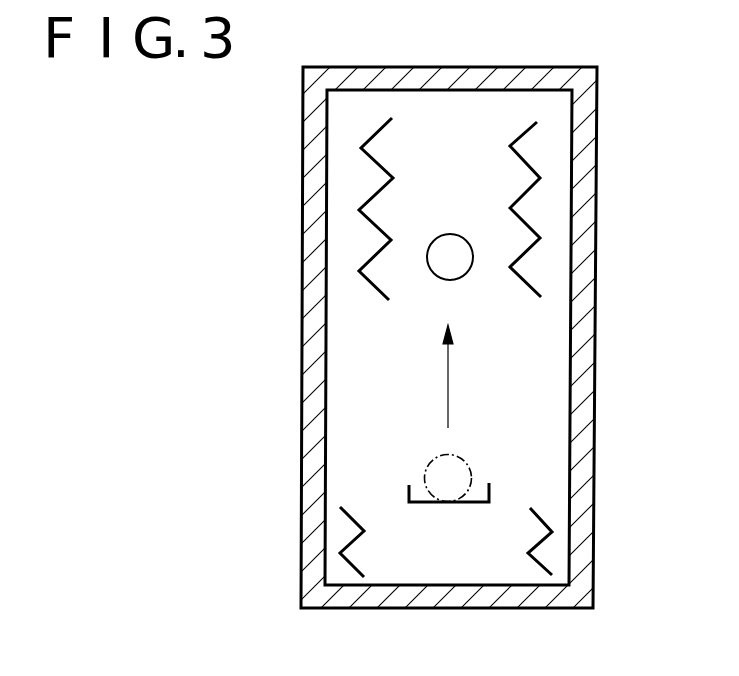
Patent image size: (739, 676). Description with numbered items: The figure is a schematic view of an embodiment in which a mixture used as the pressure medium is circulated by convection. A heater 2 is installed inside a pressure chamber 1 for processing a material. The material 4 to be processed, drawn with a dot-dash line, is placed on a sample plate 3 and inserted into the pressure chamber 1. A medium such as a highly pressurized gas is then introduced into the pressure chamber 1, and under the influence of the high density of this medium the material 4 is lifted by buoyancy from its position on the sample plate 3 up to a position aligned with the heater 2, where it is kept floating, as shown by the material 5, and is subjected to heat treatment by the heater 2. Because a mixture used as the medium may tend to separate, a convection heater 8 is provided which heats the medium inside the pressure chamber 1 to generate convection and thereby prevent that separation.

The pressure chamber 1 is at (308, 235).
The heater 2 is at (373, 285).
The sample plate 3 is at (409, 493).
The material 4 is at (455, 475).
The material 5 is at (454, 270).
The convection heater 8 is at (545, 538).